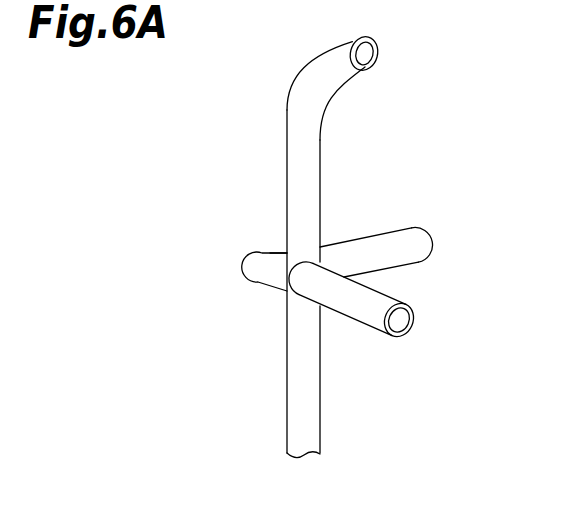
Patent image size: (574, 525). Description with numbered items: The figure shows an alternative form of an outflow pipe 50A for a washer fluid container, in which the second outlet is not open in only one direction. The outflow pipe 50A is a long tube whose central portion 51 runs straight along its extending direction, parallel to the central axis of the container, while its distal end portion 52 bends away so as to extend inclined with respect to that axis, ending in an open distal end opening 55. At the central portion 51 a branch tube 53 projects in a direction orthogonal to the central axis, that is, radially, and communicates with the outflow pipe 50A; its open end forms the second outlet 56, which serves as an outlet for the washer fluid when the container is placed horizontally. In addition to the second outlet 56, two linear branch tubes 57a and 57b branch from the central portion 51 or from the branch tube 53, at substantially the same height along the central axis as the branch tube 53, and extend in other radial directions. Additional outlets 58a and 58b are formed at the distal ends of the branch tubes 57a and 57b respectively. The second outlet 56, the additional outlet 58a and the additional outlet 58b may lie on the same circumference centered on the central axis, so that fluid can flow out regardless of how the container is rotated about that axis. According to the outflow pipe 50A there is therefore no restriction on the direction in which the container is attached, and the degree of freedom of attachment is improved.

The outflow pipe 50A is at (273, 360).
The central portion 51 is at (287, 320).
The distal end portion 52 is at (322, 75).
The branch tube 53 is at (275, 252).
The distal end opening 55 is at (369, 50).
The second outlet 56 is at (246, 268).
The branch tube 57a is at (368, 243).
The branch tube 57b is at (357, 318).
The additional outlet 58a is at (432, 243).
The additional outlet 58b is at (410, 320).